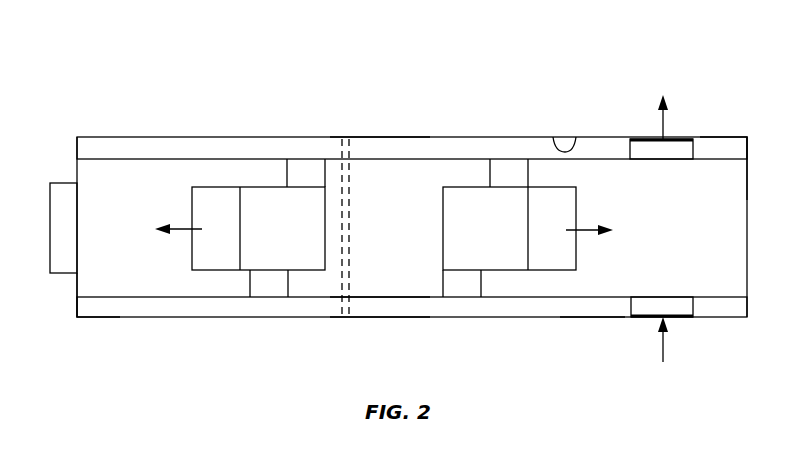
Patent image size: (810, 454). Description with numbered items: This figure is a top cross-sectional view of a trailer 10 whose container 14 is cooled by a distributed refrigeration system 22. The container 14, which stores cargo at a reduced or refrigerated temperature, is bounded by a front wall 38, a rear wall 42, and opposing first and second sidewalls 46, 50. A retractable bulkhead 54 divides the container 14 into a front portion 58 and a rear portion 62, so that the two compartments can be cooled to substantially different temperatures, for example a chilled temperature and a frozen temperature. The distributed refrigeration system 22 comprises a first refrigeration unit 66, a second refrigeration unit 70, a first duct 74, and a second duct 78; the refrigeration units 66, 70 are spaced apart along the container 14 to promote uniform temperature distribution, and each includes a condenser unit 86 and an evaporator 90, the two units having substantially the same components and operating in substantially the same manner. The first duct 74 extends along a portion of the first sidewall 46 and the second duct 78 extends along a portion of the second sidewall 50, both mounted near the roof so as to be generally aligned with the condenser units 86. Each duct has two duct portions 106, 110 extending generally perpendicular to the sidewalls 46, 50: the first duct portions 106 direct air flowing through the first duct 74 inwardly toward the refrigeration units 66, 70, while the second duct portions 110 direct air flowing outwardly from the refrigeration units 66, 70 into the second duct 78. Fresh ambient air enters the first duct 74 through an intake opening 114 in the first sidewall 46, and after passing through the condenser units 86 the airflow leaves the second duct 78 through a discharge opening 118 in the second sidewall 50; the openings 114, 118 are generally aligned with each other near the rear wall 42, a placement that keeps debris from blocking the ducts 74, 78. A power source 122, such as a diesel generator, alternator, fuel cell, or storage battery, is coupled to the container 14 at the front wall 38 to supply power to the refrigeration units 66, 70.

The trailer 10 is at (514, 60).
The container 14 is at (148, 134).
The distributed refrigeration system 22 is at (110, 282).
The front wall 38 is at (77, 290).
The rear wall 42 is at (748, 230).
The first sidewall 46 is at (590, 318).
The second sidewall 50 is at (383, 138).
The bulkhead 54 is at (350, 218).
The front portion 58 is at (98, 165).
The rear portion 62 is at (735, 161).
The first refrigeration unit 66 is at (238, 182).
The second refrigeration unit 70 is at (466, 182).
The first duct 74 is at (403, 310).
The second duct 78 is at (566, 145).
The condenser unit 86 is at (302, 254).
The evaporator 90 is at (200, 255).
The first duct portion 106 is at (250, 283).
The second duct portion 110 is at (325, 175).
The intake opening 114 is at (676, 318).
The discharge opening 118 is at (676, 139).
The power source 122 is at (50, 197).